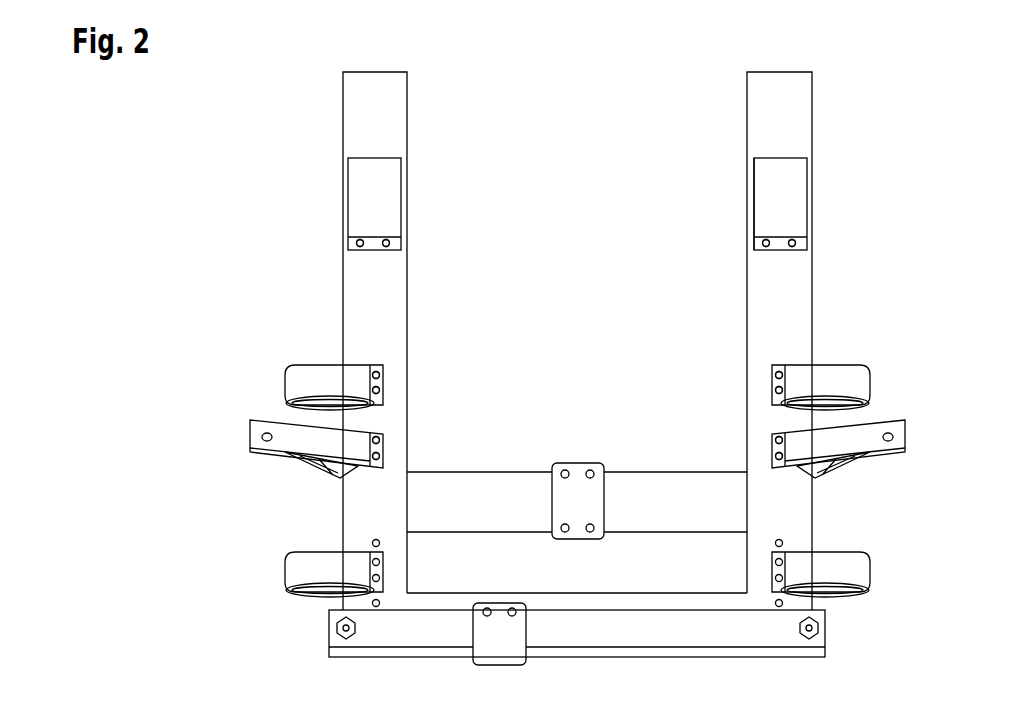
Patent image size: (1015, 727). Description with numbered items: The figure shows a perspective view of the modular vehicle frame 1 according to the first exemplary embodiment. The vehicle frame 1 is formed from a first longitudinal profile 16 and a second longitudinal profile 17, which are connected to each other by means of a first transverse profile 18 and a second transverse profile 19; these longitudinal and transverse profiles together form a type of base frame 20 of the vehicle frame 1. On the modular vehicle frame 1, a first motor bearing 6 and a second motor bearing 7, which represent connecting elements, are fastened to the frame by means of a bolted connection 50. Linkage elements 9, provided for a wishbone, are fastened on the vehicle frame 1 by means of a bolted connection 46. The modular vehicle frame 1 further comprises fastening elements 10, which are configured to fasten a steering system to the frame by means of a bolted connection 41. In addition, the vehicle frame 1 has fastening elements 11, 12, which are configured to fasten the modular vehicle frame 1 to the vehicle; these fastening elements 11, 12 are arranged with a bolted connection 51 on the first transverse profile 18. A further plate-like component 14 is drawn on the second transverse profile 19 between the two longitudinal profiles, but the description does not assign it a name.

The vehicle frame 1 is at (907, 137).
The first motor bearing 6 is at (360, 178).
The second motor bearing 7 is at (795, 176).
The linkage elements 9 is at (300, 383).
The fastening elements 10 is at (258, 437).
The fastening element 11 is at (500, 626).
The fastening element 12 is at (337, 628).
The connecting plate 14 is at (578, 488).
The first longitudinal profile 16 is at (388, 108).
The second longitudinal profile 17 is at (770, 108).
The first transverse profile 18 is at (648, 626).
The second transverse profile 19 is at (518, 490).
The base frame 20 is at (822, 203).
The bolted connection 41 is at (380, 441).
The bolted connection 46 is at (380, 375).
The bolted connection 50 is at (360, 244).
The bolted connection 51 is at (487, 608).